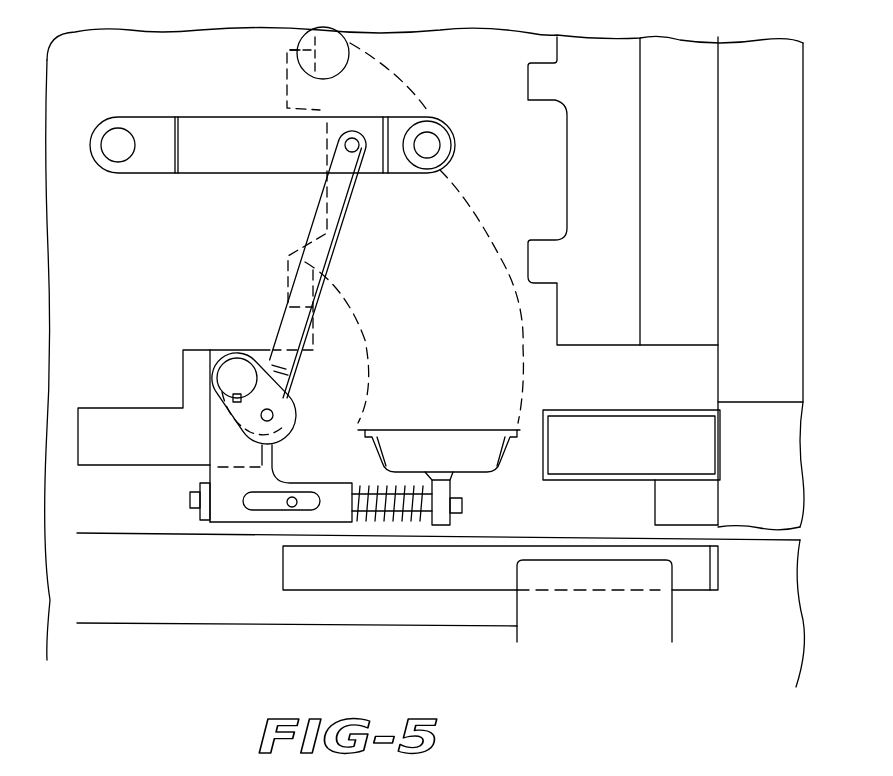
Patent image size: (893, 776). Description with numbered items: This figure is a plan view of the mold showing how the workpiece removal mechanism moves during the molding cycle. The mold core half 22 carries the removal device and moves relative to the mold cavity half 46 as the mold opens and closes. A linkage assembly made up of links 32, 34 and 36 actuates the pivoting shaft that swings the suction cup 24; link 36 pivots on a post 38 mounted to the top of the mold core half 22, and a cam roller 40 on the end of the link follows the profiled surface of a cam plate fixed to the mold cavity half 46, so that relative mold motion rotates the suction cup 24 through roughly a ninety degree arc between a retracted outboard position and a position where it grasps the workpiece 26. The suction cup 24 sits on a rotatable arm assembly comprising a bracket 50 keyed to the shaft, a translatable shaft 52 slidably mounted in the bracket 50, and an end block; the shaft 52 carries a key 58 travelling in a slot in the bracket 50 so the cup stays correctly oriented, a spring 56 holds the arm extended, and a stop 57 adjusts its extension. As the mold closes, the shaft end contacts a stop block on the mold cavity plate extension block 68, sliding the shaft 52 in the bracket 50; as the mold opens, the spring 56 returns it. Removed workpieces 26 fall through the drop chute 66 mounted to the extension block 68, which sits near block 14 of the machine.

The mold core half 22 is at (123, 98).
The post 38 is at (121, 156).
The link 36 is at (240, 161).
The cam roller 40 is at (433, 142).
The link 34 is at (330, 258).
The link 32 is at (240, 413).
The workpiece 26 is at (373, 450).
The suction cup 24 is at (452, 475).
The bracket 50 is at (250, 493).
The stop 57 is at (205, 515).
The key 58 is at (292, 502).
The spring 56 is at (377, 517).
The translatable shaft 52 is at (403, 515).
The drop chute 66 is at (645, 460).
The block 14 is at (697, 519).
The mold cavity plate extension block 68 is at (775, 492).
The mold cavity half 46 is at (760, 224).